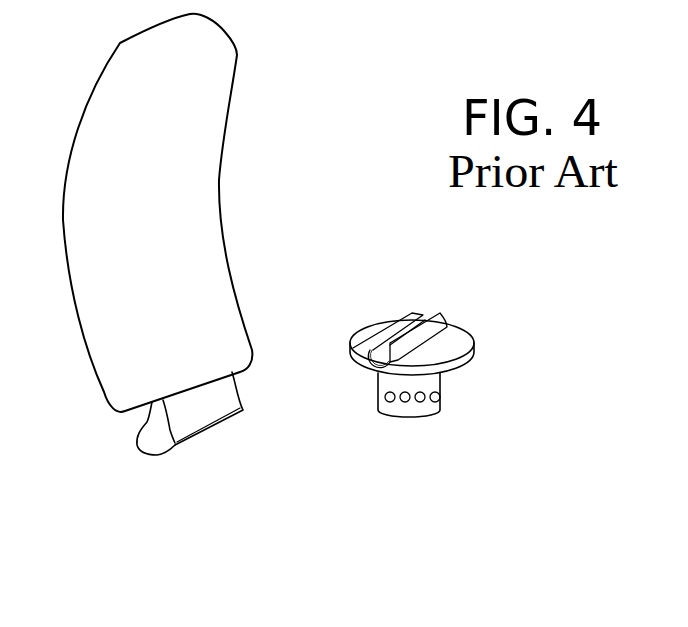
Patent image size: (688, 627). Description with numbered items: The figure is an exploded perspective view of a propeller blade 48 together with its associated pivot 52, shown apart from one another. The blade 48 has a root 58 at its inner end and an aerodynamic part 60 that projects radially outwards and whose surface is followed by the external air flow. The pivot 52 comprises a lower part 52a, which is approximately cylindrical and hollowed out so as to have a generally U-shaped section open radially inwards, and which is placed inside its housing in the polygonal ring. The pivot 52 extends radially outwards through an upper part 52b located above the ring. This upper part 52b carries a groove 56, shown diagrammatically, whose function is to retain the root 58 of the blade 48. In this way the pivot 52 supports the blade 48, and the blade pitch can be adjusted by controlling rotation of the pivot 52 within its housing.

The blade 48 is at (218, 244).
The aerodynamic part 60 is at (218, 170).
The root 58 is at (153, 438).
The pivot 52 is at (431, 341).
The lower part 52a is at (442, 393).
The upper part 52b is at (462, 363).
The groove 56 is at (382, 357).